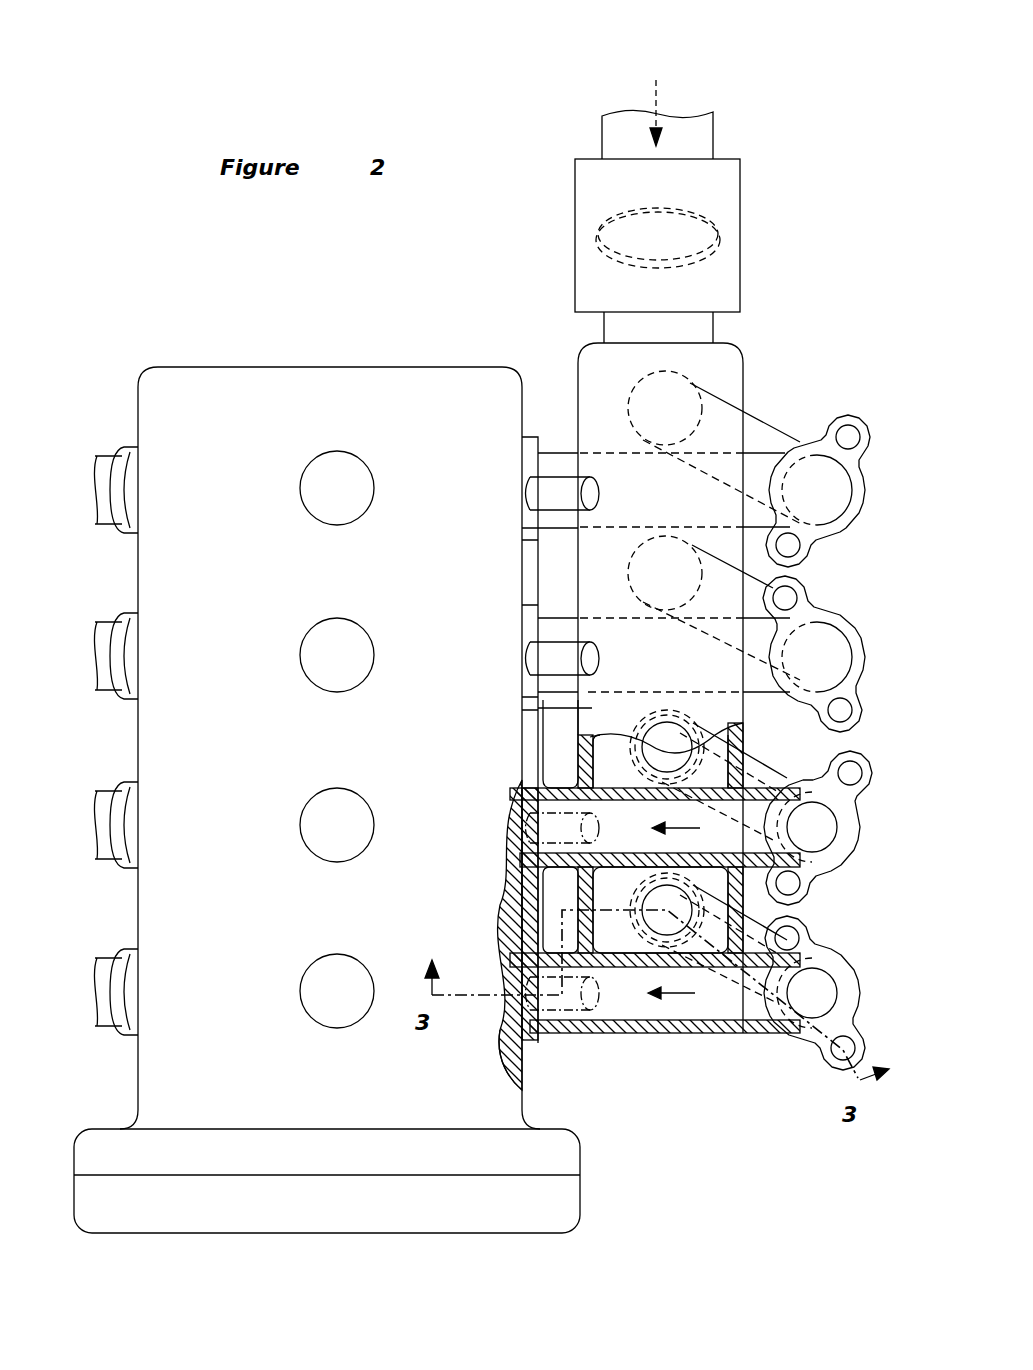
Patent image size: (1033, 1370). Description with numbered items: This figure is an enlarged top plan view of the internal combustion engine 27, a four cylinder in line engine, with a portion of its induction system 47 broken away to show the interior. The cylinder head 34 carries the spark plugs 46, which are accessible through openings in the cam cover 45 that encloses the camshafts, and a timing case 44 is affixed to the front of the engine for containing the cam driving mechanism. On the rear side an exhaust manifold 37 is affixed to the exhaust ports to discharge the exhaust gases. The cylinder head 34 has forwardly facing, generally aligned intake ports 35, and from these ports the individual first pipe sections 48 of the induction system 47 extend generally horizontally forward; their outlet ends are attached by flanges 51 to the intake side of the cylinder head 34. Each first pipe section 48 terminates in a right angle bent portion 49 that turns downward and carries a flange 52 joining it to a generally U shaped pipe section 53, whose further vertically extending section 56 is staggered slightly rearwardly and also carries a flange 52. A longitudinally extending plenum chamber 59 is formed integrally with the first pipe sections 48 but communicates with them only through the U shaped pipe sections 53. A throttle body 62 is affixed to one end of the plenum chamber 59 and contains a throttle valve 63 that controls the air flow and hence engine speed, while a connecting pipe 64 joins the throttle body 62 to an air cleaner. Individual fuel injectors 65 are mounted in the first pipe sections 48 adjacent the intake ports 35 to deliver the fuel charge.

The internal combustion engine 27 is at (377, 355).
The cam cover 45 is at (280, 385).
The timing case 44 is at (88, 1190).
The spark plugs 46 is at (317, 503).
The exhaust manifold 37 is at (102, 514).
The induction system 47 is at (786, 330).
The connecting pipe 64 is at (713, 135).
The throttle body 62 is at (728, 183).
The throttle valve 63 is at (720, 240).
The first pipe sections 48 is at (700, 1035).
The intake ports 35 is at (509, 979).
The cylinder head 34 is at (503, 1073).
The flanges 51 is at (530, 437).
The vertically extending section 56 is at (617, 968).
The U shaped pipe section 53 is at (745, 1030).
The fuel injectors 65 is at (560, 650).
The plenum chamber 59 is at (592, 707).
The flanges 52 is at (873, 432).
The right angle bent portions 49 is at (853, 497).